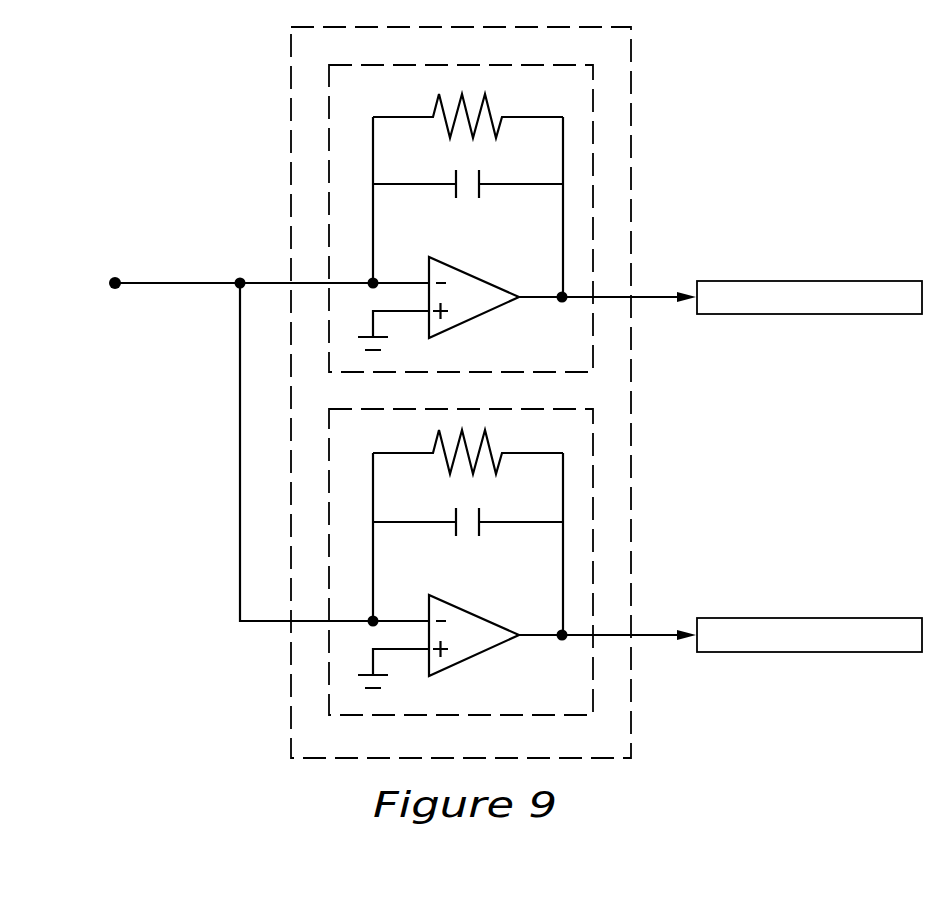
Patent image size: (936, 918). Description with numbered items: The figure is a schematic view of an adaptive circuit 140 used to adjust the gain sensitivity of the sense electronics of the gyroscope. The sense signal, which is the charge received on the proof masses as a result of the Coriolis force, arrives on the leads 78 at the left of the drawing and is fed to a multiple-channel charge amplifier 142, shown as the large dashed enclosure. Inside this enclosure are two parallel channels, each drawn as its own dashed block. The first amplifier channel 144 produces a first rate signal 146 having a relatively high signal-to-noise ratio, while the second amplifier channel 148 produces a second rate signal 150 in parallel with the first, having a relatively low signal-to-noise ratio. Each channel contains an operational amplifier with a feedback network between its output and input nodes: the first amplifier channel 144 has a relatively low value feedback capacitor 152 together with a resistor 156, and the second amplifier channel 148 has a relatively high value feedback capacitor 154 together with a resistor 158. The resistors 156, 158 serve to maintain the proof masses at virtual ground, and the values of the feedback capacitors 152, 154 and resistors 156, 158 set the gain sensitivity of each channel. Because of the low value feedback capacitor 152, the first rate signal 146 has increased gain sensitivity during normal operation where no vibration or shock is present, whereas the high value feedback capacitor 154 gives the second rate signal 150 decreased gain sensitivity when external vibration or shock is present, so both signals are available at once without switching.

The leads 78 is at (113, 280).
The adaptive circuit 140 is at (680, 52).
The multiple-channel charge amplifier 142 is at (631, 381).
The first amplifier channel 144 is at (520, 218).
The first rate signal 146 is at (857, 281).
The second amplifier channel 148 is at (520, 562).
The second rate signal 150 is at (857, 618).
The feedback capacitor 152 is at (479, 175).
The feedback capacitor 154 is at (479, 513).
The resistor 156 is at (438, 99).
The resistor 158 is at (438, 436).